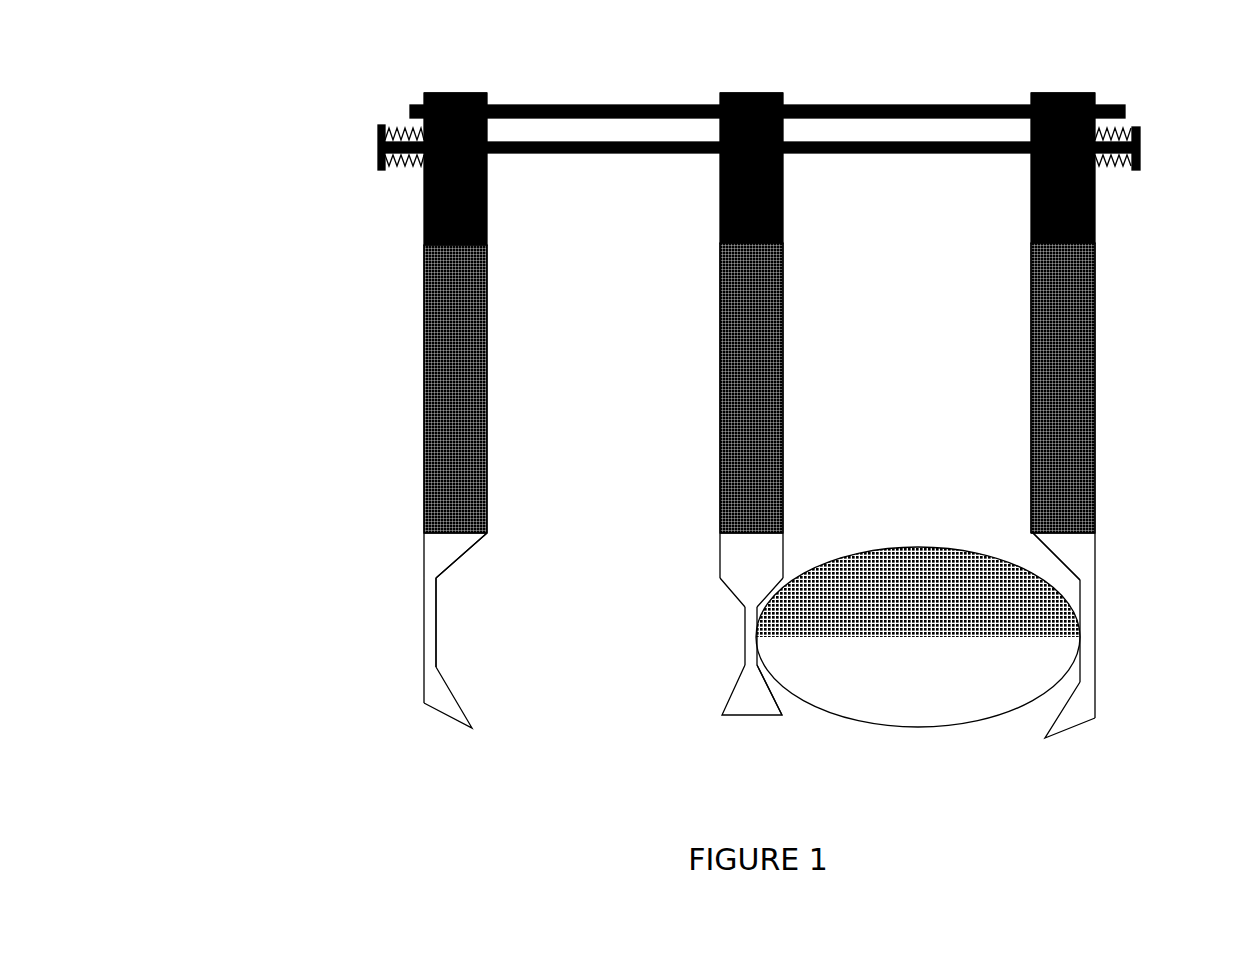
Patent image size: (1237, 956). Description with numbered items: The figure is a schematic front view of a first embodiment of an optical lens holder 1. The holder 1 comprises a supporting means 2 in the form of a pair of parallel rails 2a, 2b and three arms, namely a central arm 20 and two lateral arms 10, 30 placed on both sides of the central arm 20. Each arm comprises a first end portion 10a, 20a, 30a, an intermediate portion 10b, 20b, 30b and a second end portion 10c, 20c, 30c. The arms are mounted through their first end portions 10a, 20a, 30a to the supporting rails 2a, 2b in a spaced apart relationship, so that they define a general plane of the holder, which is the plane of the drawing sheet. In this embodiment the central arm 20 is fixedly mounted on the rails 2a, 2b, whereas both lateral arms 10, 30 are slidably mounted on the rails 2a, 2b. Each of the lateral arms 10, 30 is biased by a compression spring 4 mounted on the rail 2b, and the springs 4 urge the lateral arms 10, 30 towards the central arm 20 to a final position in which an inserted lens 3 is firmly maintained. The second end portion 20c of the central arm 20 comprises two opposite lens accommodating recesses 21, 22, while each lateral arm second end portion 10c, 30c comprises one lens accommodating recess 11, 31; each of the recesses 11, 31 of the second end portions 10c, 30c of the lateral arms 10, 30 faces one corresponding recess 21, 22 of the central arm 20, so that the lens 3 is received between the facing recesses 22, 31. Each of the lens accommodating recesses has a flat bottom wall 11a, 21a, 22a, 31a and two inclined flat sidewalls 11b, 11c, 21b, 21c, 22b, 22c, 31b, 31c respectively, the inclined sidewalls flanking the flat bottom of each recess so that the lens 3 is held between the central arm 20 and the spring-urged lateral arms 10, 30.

The optical lens holder 1 is at (1112, 375).
The supporting means 2 is at (758, 133).
The rail 2a is at (852, 105).
The rail 2b is at (815, 155).
The lens 3 is at (905, 715).
The compression spring 4 is at (403, 137).
The lateral arm 10 is at (422, 410).
The first end portion 10a is at (487, 128).
The intermediate portion 10b is at (487, 350).
The second end portion 10c is at (424, 572).
The lens accommodating recess 11 is at (499, 630).
The flat bottom wall 11a is at (436, 618).
The inclined flat sidewall 11b is at (445, 578).
The inclined flat sidewall 11c is at (455, 700).
The central arm 20 is at (747, 424).
The first end portion 20a is at (720, 128).
The intermediate portion 20b is at (783, 297).
The second end portion 20c is at (738, 553).
The lens accommodating recess 21 is at (701, 667).
The flat bottom wall 21a is at (742, 637).
The inclined flat sidewall 21b is at (728, 595).
The inclined flat sidewall 21c is at (723, 707).
The lens accommodating recess 22 is at (849, 654).
The flat bottom wall 22a is at (757, 657).
The inclined flat sidewall 22b is at (760, 598).
The inclined flat sidewall 22c is at (785, 702).
The lateral arm 30 is at (1073, 439).
The first end portion 30a is at (1031, 128).
The intermediate portion 30b is at (1095, 287).
The second end portion 30c is at (1097, 572).
The lens accommodating recess 31 is at (1077, 654).
The flat bottom wall 31a is at (1070, 600).
The inclined flat sidewall 31b is at (1052, 552).
The inclined flat sidewall 31c is at (1065, 725).